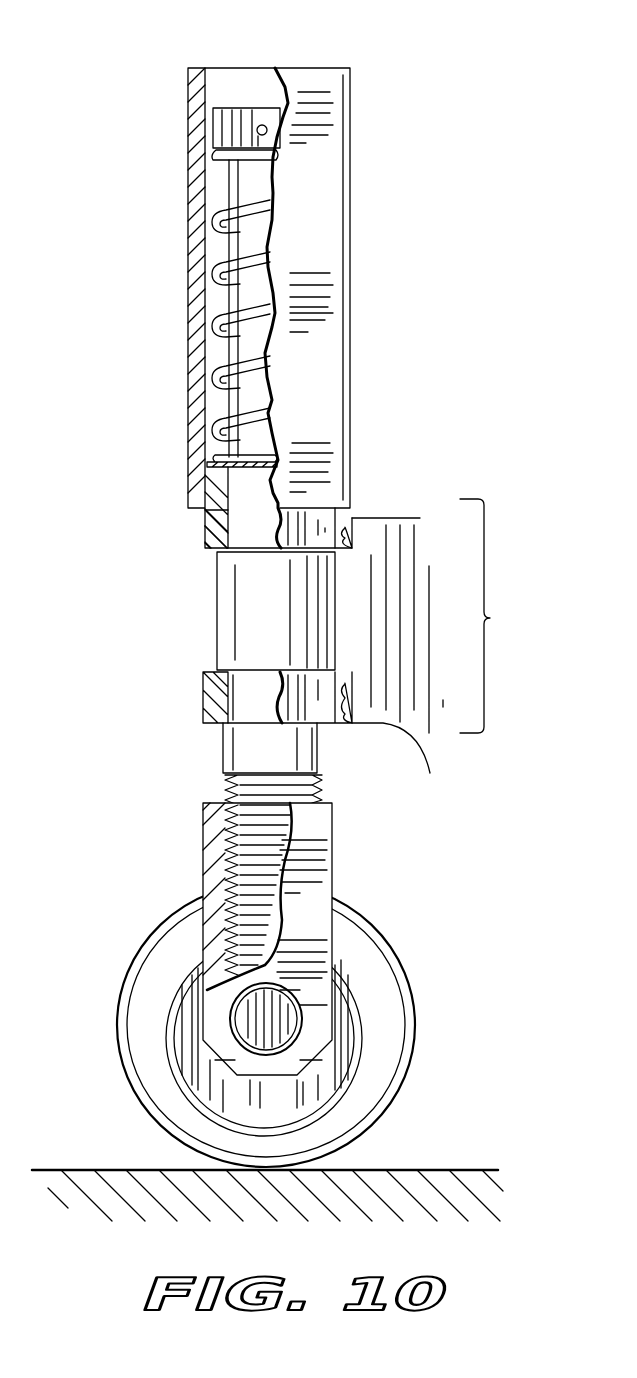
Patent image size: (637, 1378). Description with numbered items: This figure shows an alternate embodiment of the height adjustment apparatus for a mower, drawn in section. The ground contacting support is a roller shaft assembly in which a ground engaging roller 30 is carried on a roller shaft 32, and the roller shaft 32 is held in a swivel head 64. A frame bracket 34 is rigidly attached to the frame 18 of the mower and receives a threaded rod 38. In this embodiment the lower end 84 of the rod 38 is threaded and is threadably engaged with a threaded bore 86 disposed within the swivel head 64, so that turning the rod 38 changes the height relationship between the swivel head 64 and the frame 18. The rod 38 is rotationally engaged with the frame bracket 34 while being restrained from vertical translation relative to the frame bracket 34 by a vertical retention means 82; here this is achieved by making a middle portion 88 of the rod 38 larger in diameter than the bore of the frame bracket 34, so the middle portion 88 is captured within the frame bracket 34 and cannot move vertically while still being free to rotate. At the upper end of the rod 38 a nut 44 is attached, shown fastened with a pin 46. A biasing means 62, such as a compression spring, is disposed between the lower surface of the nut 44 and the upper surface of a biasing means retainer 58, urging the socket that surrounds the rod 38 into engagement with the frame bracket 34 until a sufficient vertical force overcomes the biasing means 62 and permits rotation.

The nut 44 is at (246, 140).
The pin 46 is at (262, 140).
The biasing means 62 is at (215, 212).
The threaded rod 38 is at (225, 346).
The biasing means retainer 58 is at (207, 465).
The frame bracket 34 is at (205, 528).
The middle portion 88 is at (230, 614).
The frame 18 is at (406, 521).
The vertical retention means 82 is at (490, 618).
The lower end 84 is at (233, 822).
The threaded bore 86 is at (228, 870).
The swivel head 64 is at (333, 850).
The ground engaging roller 30 is at (397, 947).
The roller shaft 32 is at (268, 1020).